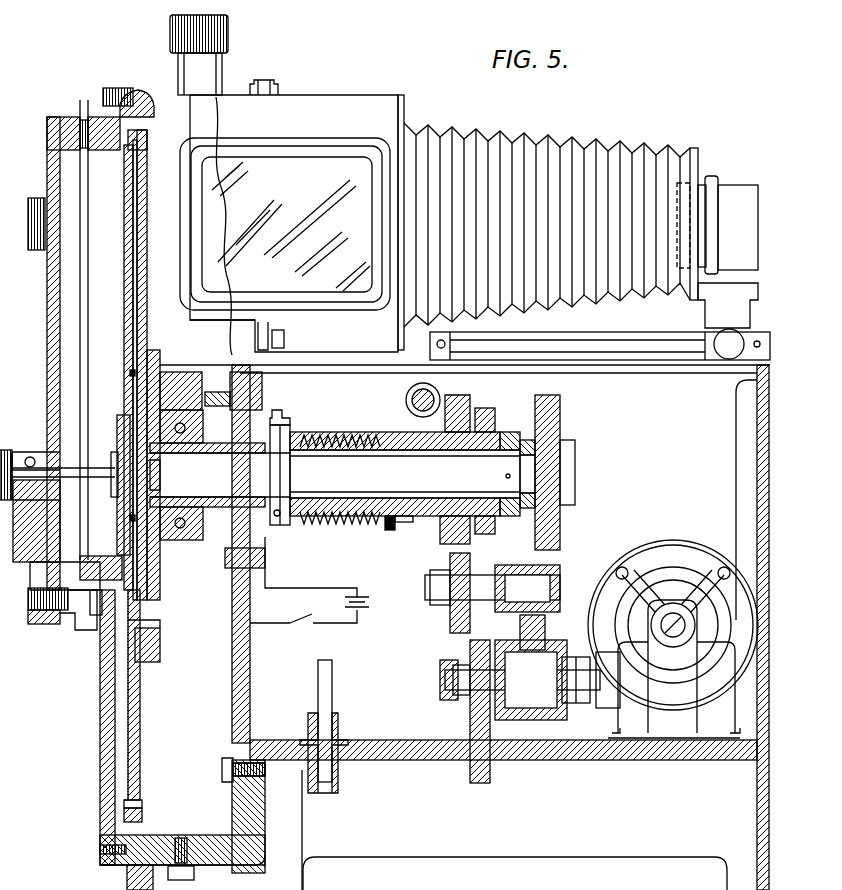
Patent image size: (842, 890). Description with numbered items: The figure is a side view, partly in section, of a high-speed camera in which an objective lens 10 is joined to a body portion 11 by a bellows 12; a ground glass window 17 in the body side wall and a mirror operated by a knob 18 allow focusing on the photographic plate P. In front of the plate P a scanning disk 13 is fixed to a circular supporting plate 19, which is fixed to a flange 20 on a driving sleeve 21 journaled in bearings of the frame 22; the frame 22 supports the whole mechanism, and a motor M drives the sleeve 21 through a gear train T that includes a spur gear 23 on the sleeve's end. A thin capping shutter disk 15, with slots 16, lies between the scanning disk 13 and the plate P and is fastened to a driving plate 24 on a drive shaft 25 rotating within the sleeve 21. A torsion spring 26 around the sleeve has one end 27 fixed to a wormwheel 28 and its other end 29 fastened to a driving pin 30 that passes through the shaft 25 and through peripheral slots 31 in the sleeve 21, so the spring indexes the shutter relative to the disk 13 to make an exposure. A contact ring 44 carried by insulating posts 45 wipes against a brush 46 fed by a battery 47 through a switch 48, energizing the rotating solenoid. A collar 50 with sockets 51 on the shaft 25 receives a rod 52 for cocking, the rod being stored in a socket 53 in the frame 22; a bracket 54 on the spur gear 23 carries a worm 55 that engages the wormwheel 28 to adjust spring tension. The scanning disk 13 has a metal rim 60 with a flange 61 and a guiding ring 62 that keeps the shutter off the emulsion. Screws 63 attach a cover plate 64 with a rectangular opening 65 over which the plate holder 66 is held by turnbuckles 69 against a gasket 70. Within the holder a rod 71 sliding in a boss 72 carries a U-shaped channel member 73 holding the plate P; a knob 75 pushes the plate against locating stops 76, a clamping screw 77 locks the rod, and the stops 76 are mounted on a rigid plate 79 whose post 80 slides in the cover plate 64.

The objective lens 10 is at (735, 190).
The body portion 11 is at (378, 100).
The bellows 12 is at (585, 148).
The scanning disk 13 is at (140, 724).
The capping shutter disk 15 is at (118, 274).
The slots 16 is at (472, 765).
The ground glass window 17 is at (285, 224).
The knob 18 is at (228, 40).
The supporting plate 19 is at (160, 625).
The flange 20 is at (165, 556).
The driving sleeve 21 is at (334, 526).
The frame 22 is at (742, 445).
The spur gear 23 is at (448, 545).
The driving plate 24 is at (150, 372).
The drive shaft 25 is at (412, 474).
The torsion spring 26 is at (336, 432).
The spring end 27 is at (387, 530).
The wormwheel 28 is at (405, 523).
The spring end 29 is at (290, 420).
The driving pin 30 is at (290, 466).
The peripheral slots 31 is at (280, 526).
The contact ring 44 is at (226, 552).
The insulating posts 45 is at (210, 392).
The electrical brush 46 is at (230, 570).
The battery 47 is at (360, 612).
The switch 48 is at (298, 625).
The collar 50 is at (535, 420).
The sockets 51 is at (486, 408).
The rod 52 is at (332, 686).
The socket 53 is at (338, 780).
The bracket 54 is at (455, 400).
The worm 55 is at (408, 394).
The metal rim 60 is at (142, 815).
The flange 61 is at (142, 803).
The guiding ring 62 is at (124, 804).
The screws 63 is at (116, 88).
The cover plate 64 is at (110, 150).
The rectangular opening 65 is at (96, 565).
The plate holder 66 is at (52, 368).
The turnbuckles 69 is at (60, 610).
The gasket 70 is at (84, 100).
The rod 71 is at (96, 468).
The boss 72 is at (36, 520).
The U-shaped channel member 73 is at (118, 420).
The knob 75 is at (6, 500).
The locating stops 76 is at (130, 373).
The clamping screw 77 is at (27, 455).
The rigid plate 79 is at (136, 365).
The post 80 is at (100, 625).
The photographic plate P is at (124, 242).
The motor M is at (670, 548).
The gear train T is at (460, 635).